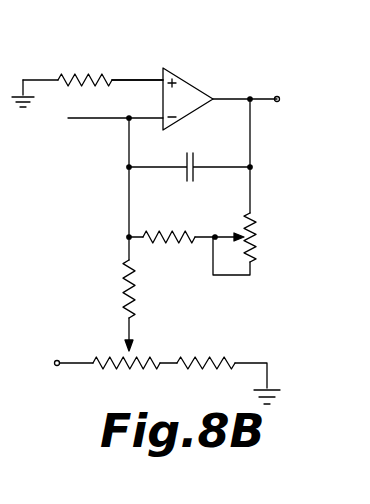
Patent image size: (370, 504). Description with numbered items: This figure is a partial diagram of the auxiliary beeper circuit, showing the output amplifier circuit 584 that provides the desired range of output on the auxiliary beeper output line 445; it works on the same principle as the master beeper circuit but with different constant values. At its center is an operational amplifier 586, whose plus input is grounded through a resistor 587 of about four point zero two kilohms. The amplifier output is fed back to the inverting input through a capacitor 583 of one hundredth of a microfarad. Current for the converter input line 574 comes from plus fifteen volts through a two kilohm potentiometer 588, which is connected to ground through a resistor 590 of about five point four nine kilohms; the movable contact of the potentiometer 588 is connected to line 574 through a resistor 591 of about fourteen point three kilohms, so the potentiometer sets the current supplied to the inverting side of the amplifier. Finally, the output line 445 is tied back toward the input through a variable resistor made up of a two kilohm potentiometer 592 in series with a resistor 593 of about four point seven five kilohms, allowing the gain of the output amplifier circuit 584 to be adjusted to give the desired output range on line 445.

The auxiliary beeper output line 445 is at (277, 96).
The converter input line 574 is at (108, 120).
The capacitor 583 is at (209, 145).
The output amplifier circuit 584 is at (120, 66).
The operational amplifier 586 is at (183, 90).
The resistor 587 is at (90, 74).
The potentiometer 588 is at (104, 352).
The resistor 590 is at (200, 356).
The resistor 591 is at (120, 290).
The potentiometer 592 is at (257, 240).
The resistor 593 is at (153, 232).